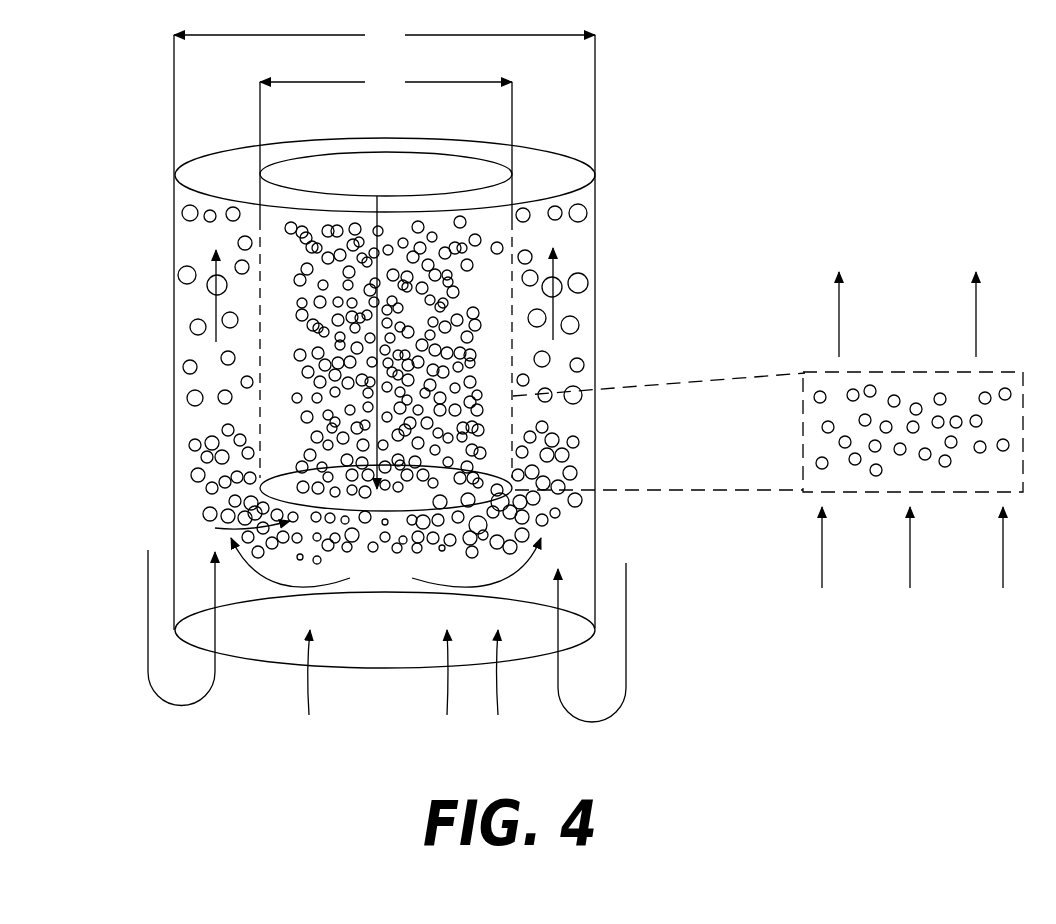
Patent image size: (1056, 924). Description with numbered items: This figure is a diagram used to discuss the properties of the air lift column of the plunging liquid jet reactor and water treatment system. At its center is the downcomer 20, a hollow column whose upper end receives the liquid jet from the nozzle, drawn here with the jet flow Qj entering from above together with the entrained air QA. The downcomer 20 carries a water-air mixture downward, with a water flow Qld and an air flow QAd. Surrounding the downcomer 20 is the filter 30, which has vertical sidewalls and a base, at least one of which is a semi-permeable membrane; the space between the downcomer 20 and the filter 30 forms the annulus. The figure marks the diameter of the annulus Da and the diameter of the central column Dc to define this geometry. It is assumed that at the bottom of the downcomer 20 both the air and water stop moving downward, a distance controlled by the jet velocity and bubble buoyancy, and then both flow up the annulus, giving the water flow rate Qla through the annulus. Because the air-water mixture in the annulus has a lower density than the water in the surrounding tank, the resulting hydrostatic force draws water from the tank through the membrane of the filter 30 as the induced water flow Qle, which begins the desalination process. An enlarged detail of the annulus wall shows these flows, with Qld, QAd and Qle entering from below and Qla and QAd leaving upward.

The downcomer 20 is at (493, 197).
The filter 30 is at (577, 238).
The annulus diameter Da is at (384, 40).
The core diameter Dc is at (386, 87).
The jet flow Qj is at (345, 183).
The air flow QA is at (425, 180).
The water flow rate through the annulus Qla is at (197, 242).
The induced water flow Qle is at (196, 310).
The water flow in the downcomer Qld is at (528, 565).
The air flow in the downcomer QAd is at (676, 436).